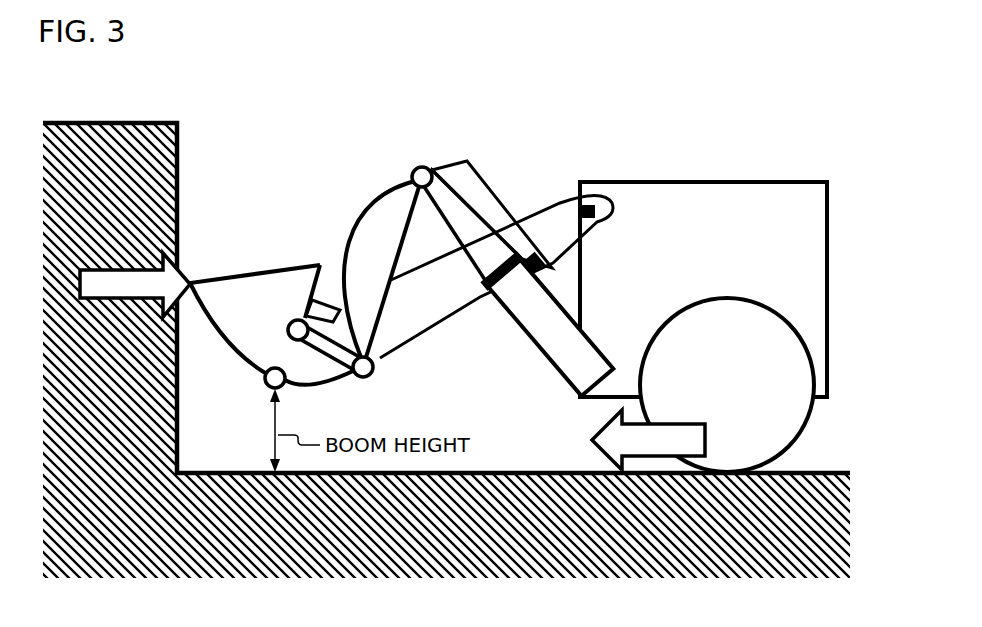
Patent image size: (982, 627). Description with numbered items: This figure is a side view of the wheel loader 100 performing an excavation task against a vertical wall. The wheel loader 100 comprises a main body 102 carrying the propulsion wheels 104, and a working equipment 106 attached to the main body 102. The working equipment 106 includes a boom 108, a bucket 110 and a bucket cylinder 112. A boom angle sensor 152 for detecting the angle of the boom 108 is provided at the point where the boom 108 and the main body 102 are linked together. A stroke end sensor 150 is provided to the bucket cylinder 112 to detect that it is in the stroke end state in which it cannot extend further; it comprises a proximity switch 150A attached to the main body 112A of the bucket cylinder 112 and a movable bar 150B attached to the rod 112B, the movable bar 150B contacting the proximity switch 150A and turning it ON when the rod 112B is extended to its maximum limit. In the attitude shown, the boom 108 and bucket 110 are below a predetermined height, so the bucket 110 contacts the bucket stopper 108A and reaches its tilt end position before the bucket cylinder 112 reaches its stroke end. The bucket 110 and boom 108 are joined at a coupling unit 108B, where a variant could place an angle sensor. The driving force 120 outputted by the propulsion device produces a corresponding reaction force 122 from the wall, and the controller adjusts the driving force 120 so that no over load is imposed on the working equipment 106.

The wheel loader 100 is at (524, 260).
The main body 102 is at (763, 181).
The propulsion wheels 104 is at (787, 407).
The working equipment 106 is at (434, 244).
The boom 108 is at (397, 333).
The bucket stopper 108A is at (317, 302).
The coupling unit 108B is at (263, 380).
The bucket 110 is at (281, 314).
The bucket cylinder 112 is at (519, 297).
The main body of the bucket cylinder 112A is at (540, 328).
The rod 112B is at (475, 247).
The driving force 120 is at (685, 430).
The reaction force 122 is at (113, 277).
The stroke end sensor 150 is at (516, 160).
The proximity switch 150A is at (537, 255).
The movable bar 150B is at (476, 172).
The boom angle sensor 152 is at (598, 211).